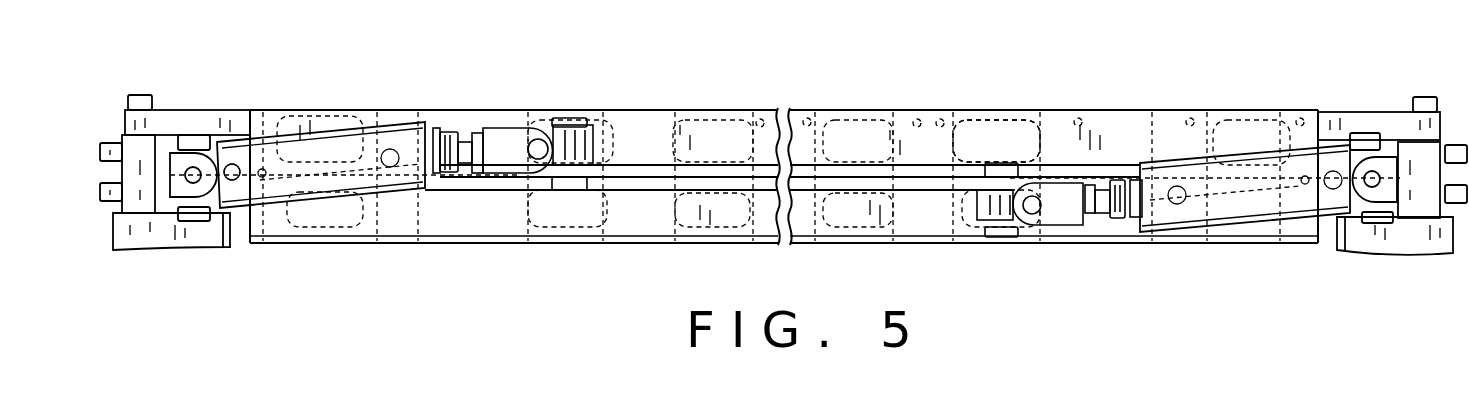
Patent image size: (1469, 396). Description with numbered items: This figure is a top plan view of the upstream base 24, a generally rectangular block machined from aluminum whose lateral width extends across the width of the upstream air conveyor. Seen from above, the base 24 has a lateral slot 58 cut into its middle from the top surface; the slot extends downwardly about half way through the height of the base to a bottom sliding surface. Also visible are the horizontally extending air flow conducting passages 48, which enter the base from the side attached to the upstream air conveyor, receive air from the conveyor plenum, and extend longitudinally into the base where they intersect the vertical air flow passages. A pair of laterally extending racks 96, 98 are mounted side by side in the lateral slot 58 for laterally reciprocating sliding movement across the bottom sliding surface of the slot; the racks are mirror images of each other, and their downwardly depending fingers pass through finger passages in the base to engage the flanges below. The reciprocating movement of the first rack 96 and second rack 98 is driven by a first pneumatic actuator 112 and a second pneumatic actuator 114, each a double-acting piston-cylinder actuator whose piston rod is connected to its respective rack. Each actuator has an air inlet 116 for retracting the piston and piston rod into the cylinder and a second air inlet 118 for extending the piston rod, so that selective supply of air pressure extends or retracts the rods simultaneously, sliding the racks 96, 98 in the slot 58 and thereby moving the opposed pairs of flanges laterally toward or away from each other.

The upstream base 24 is at (1095, 122).
The horizontally extending air flow conducting passages 48 is at (993, 120).
The lateral slot 58 is at (638, 158).
The first rack 96 is at (922, 185).
The second rack 98 is at (822, 165).
The first pneumatic actuator 112 is at (270, 153).
The second pneumatic actuator 114 is at (1288, 161).
The air inlet 116 is at (388, 150).
The second air inlet 118 is at (233, 185).